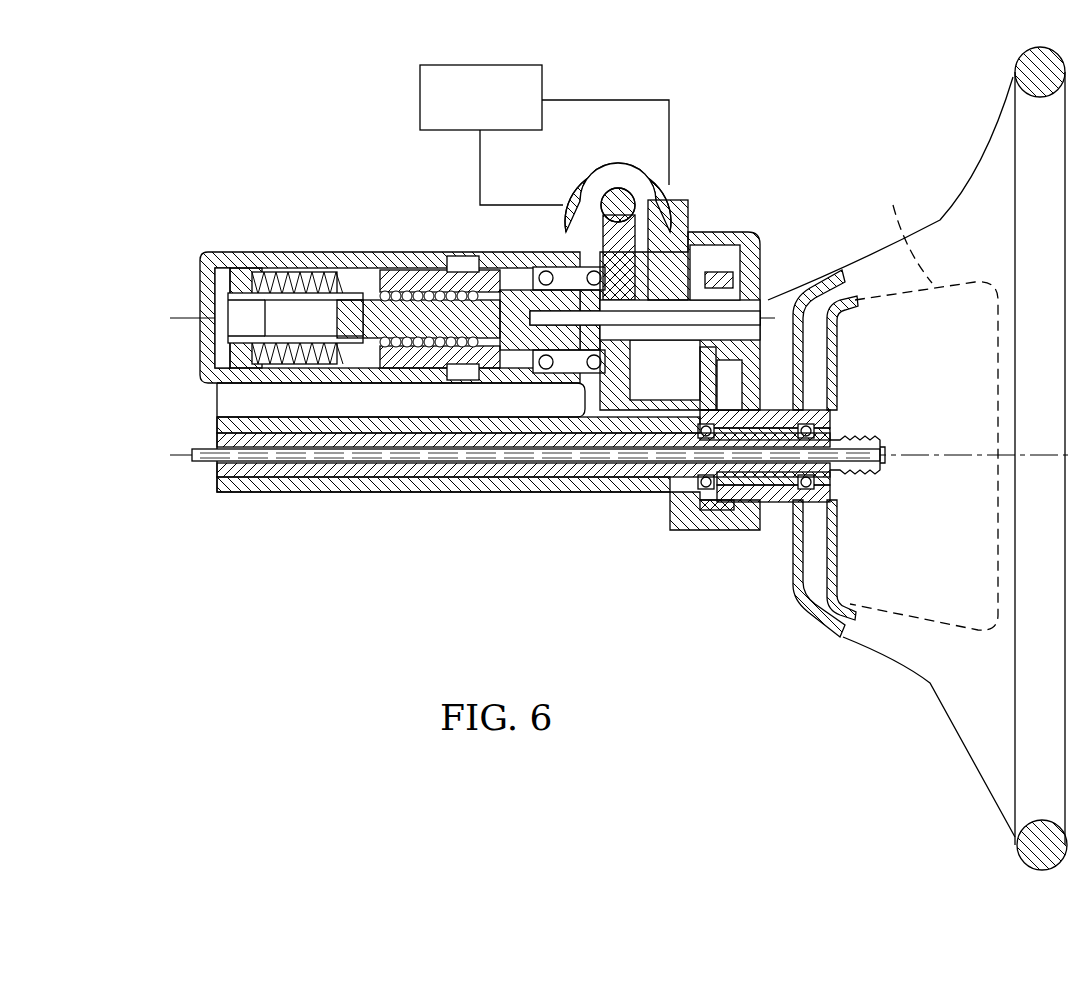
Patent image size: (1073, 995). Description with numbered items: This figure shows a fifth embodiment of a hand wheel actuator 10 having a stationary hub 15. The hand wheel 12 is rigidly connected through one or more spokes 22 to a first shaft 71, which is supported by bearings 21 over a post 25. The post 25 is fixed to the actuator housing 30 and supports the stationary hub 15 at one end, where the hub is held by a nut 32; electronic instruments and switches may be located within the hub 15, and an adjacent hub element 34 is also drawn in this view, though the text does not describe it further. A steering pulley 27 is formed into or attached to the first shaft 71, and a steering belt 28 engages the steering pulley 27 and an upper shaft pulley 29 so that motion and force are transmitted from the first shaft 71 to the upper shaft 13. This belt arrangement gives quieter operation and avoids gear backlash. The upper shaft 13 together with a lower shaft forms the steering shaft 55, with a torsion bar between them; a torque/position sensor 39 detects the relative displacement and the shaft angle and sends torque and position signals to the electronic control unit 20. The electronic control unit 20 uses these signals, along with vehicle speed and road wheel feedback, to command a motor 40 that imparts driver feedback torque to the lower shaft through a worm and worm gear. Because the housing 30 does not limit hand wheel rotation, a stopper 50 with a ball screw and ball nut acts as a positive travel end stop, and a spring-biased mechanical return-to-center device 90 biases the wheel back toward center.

The hand wheel actuator 10 is at (312, 598).
The hand wheel 12 is at (1013, 170).
The upper shaft 13 is at (770, 298).
The stationary hub 15 is at (924, 398).
The electronic control unit 20 is at (540, 66).
The bearings 21 is at (802, 428).
The spokes 22 is at (810, 626).
The post 25 is at (545, 490).
The steering pulley 27 is at (732, 510).
The steering belt 28 is at (758, 395).
The upper shaft pulley 29 is at (757, 242).
The actuator housing 30 is at (590, 493).
The nut 32 is at (862, 487).
The hub cup 34 is at (830, 520).
The torque/position sensor 39 is at (690, 236).
The motor 40 is at (568, 185).
The stopper 50 is at (428, 228).
The steering shaft 55 is at (570, 276).
The first shaft 71 is at (778, 504).
The spring-biased mechanical return-to-center device 90 is at (256, 222).